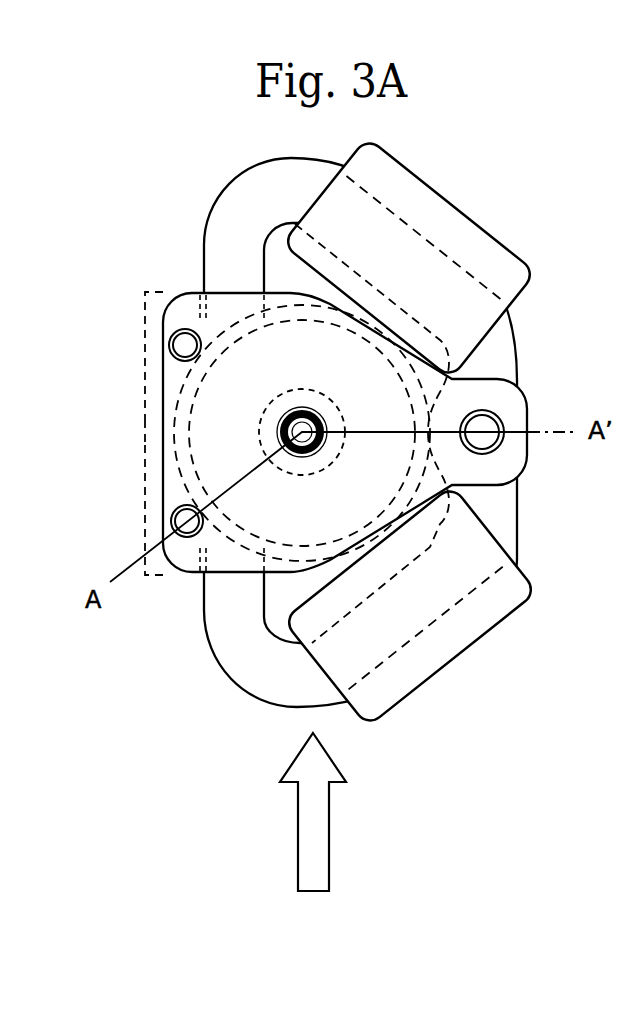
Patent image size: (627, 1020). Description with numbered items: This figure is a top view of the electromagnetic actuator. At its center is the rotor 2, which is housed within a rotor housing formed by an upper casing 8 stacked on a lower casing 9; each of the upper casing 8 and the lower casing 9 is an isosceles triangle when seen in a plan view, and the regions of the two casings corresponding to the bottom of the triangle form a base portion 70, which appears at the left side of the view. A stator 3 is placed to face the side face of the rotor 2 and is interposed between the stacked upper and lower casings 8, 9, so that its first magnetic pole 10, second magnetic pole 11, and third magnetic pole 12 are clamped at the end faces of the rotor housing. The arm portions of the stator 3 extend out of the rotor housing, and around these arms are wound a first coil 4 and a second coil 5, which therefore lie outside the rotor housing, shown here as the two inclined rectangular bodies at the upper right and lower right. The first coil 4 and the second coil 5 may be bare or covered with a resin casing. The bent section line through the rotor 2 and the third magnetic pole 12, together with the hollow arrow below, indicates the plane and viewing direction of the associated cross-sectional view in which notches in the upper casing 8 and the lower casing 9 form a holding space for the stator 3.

The rotor 2 is at (147, 512).
The stator 3 is at (243, 686).
The first coil 4 is at (460, 211).
The second coil 5 is at (458, 655).
The upper casing 8 is at (86, 433).
The lower casing 9 is at (163, 368).
The first magnetic pole 10 is at (228, 562).
The second magnetic pole 11 is at (220, 310).
The third magnetic pole 12 is at (452, 450).
The base portion 70 is at (145, 432).